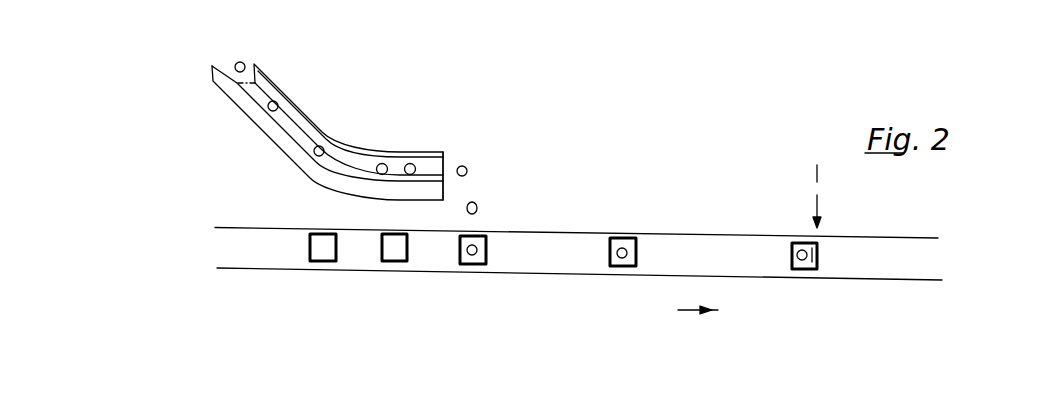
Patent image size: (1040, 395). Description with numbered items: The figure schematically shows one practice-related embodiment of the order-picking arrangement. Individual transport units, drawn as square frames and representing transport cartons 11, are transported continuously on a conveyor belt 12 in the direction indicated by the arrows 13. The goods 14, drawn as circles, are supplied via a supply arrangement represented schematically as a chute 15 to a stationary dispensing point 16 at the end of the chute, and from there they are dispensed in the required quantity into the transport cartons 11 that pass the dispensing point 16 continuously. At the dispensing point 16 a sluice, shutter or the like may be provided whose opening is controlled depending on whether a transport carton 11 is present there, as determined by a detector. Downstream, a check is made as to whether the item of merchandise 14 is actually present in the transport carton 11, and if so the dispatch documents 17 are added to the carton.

The transport cartons 11 is at (323, 258).
The conveyor belt 12 is at (258, 259).
The arrows 13 is at (688, 315).
The goods 14 is at (242, 62).
The chute 15 is at (321, 119).
The dispensing point 16 is at (449, 152).
The dispatch documents 17 is at (817, 165).